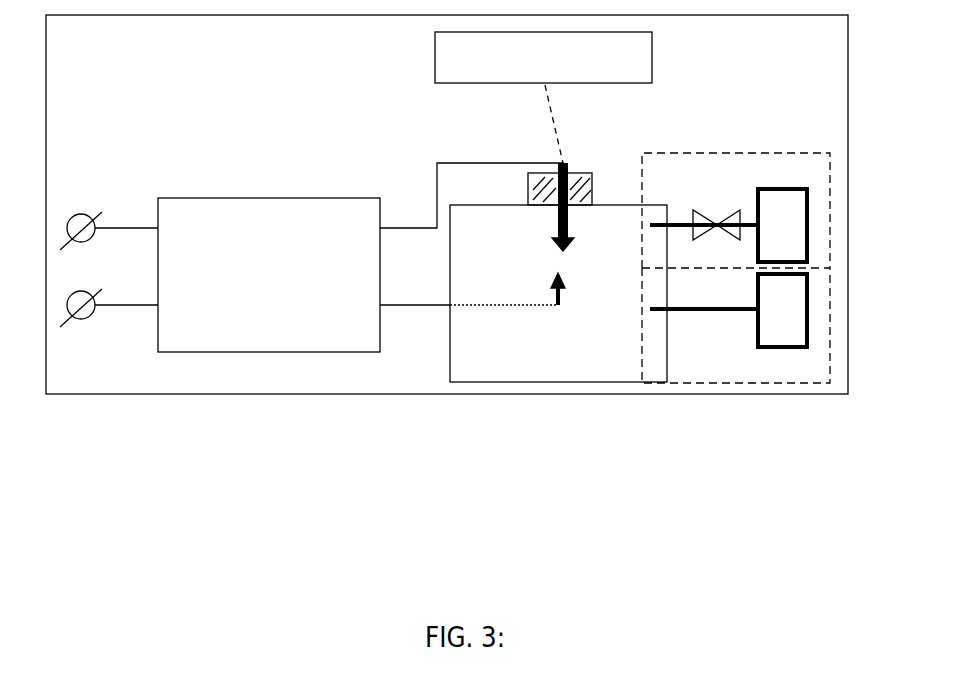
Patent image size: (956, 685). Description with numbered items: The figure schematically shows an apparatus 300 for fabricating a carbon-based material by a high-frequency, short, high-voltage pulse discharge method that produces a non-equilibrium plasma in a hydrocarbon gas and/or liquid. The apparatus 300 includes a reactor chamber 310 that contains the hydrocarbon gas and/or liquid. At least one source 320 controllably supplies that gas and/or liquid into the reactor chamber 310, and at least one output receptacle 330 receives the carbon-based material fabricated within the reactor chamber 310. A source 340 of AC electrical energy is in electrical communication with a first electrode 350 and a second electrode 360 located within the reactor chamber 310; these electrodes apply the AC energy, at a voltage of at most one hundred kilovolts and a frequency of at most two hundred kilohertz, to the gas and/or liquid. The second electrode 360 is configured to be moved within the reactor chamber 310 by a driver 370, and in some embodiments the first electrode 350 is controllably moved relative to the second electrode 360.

The apparatus 300 is at (447, 204).
The reactor chamber 310 is at (523, 293).
The source 320 is at (736, 210).
The output receptacle 330 is at (736, 325).
The source of AC electrical energy 340 is at (269, 275).
The first electrode 350 is at (512, 234).
The second electrode 360 is at (486, 176).
The driver 370 is at (543, 97).